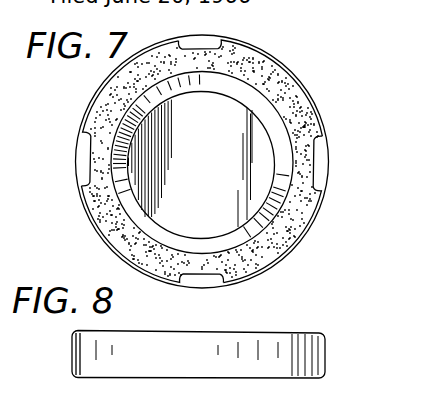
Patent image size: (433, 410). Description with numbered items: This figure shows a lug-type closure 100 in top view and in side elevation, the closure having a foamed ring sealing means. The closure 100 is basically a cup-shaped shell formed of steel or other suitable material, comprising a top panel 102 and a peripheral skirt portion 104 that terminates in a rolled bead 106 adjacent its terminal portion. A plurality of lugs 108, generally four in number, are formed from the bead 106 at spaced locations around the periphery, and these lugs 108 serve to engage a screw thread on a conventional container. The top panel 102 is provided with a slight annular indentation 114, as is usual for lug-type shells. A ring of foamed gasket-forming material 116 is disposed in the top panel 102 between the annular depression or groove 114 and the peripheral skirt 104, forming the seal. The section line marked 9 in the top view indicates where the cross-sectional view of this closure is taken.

In FIG. 7, the lug-type closure 100 is at (310, 75).
In FIG. 8, the lug-type closure 100 is at (418, 370).
In FIG. 7, the top panel 102 is at (263, 143).
In FIG. 8, the peripheral skirt portion 104 is at (295, 359).
In FIG. 7, the rolled bead 106 is at (210, 168).
In FIG. 7, the lugs 108 is at (212, 46).
In FIG. 7, the annular indentation 114 is at (217, 238).
In FIG. 7, the ring of foamed gasket-forming material 116 is at (260, 253).
In FIG. 7, the section line 9- 9 is at (33, 161).